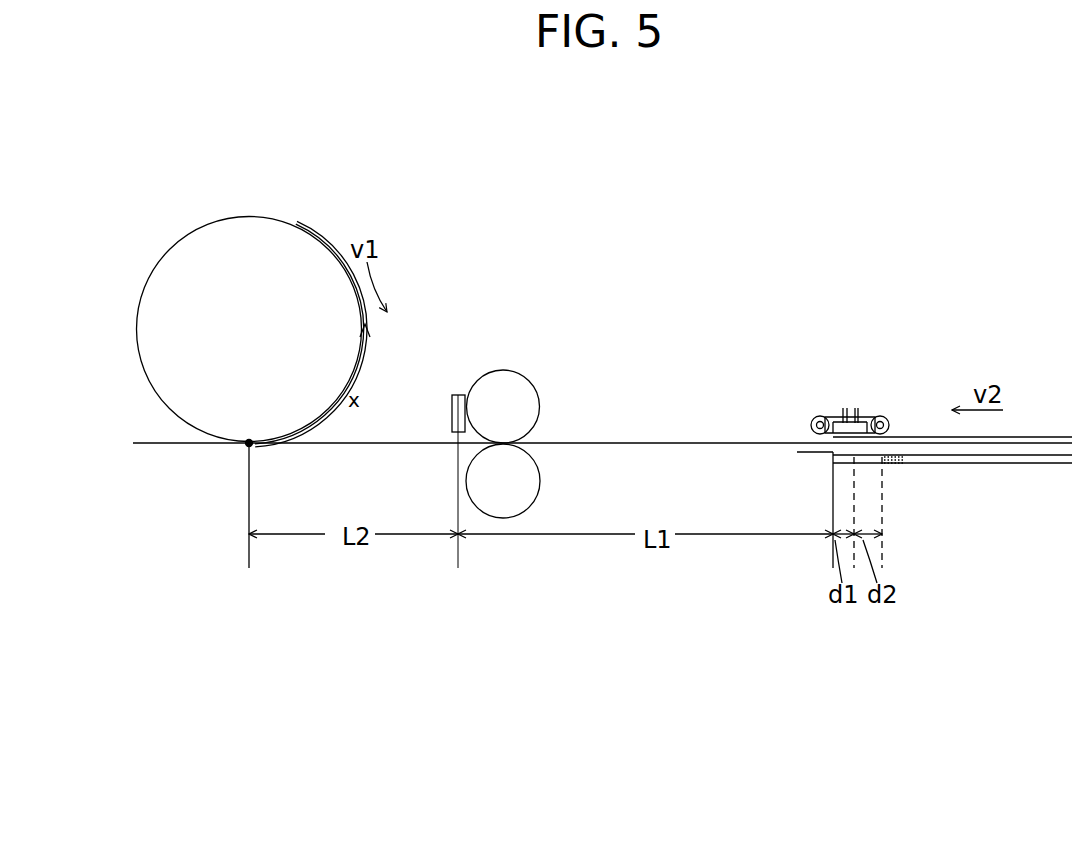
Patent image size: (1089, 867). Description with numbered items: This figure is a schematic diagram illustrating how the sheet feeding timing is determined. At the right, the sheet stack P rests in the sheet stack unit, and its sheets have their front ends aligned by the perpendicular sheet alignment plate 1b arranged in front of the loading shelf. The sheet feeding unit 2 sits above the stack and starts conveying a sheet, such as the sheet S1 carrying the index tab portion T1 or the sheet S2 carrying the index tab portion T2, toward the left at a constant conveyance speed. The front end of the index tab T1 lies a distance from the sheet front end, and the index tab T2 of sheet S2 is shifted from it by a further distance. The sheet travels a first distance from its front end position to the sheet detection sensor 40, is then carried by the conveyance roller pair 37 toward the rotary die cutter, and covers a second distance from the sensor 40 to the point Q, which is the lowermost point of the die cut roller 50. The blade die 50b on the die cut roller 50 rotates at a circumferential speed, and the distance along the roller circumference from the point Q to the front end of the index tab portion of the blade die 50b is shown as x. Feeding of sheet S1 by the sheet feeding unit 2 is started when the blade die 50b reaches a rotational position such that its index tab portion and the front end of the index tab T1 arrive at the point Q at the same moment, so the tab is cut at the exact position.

The die cut roller 50 is at (177, 300).
The blade die 50b is at (320, 237).
The sheet detection sensor 40 is at (456, 395).
The conveyance roller pair 37 is at (515, 390).
The sheet feeding unit 2 is at (823, 417).
The sheet alignment plate 1b is at (833, 481).
The lowermost point of the die cut roller Q is at (245, 448).
The sheet on which index tab T1 is formed S1 is at (930, 437).
The sheet on which index tab T2 is formed S2 is at (1033, 462).
The sheet stack P is at (1007, 511).
The index tab portion T1 is at (863, 438).
The index tab portion T2 is at (888, 468).